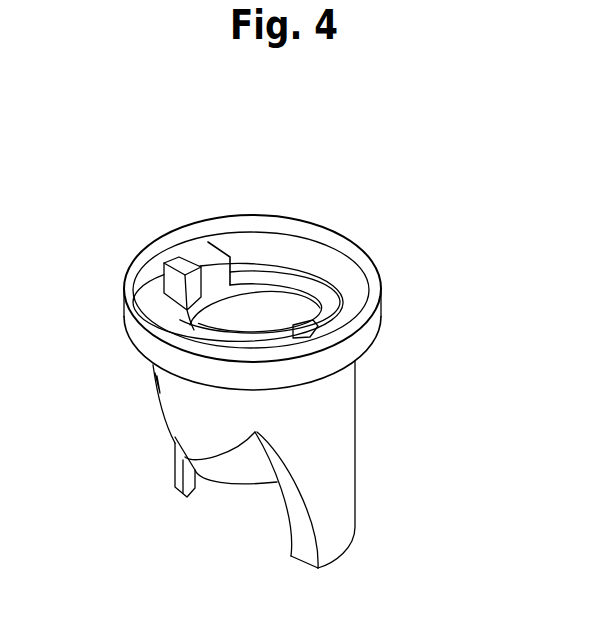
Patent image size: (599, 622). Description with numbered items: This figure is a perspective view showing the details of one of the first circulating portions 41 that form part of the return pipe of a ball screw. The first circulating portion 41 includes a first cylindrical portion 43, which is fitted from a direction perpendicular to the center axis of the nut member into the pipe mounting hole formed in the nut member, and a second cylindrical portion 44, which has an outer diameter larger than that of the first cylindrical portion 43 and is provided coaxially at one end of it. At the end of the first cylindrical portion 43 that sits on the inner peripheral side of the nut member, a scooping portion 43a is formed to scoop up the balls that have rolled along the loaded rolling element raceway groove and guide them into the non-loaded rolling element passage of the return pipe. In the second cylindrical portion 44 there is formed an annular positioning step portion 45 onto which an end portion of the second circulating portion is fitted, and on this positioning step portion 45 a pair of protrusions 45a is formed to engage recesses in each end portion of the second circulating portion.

The first circulating portion 41 is at (136, 149).
The first cylindrical portion 43 is at (357, 421).
The scooping portion 43a is at (298, 508).
The second cylindrical portion 44 is at (379, 270).
The positioning step portion 45 is at (312, 277).
The protrusions 45a is at (193, 252).